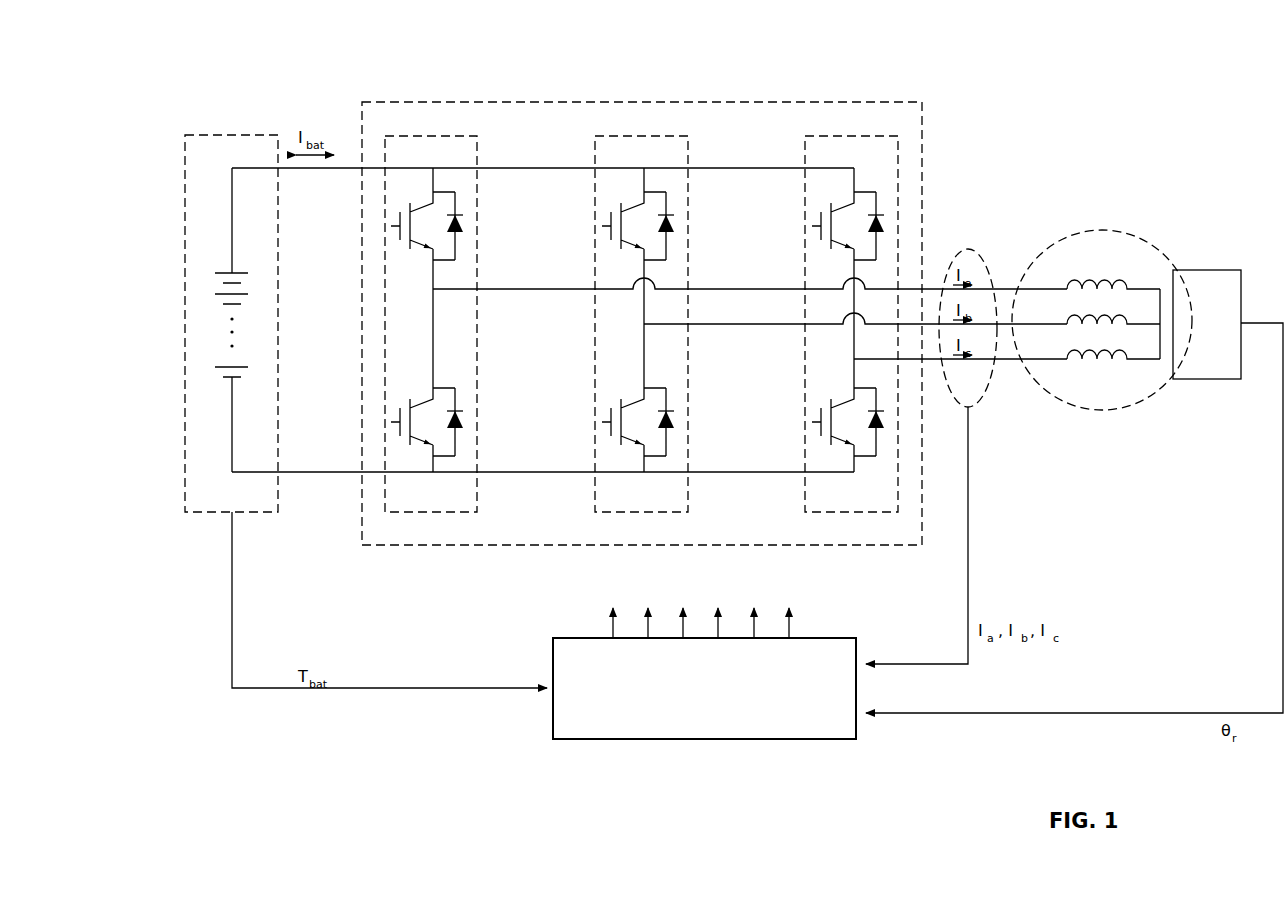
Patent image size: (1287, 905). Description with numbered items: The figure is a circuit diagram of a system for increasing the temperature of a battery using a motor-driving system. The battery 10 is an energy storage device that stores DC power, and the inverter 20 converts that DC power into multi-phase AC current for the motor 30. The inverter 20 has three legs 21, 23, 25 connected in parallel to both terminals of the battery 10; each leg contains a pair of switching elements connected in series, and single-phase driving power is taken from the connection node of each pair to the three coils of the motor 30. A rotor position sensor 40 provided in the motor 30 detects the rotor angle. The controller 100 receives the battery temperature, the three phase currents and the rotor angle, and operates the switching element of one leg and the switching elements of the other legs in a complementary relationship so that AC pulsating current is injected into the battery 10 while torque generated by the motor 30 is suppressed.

The battery 10 is at (232, 135).
The inverter 20 is at (750, 102).
The first leg 21 is at (432, 136).
The second leg 23 is at (641, 136).
The third leg 25 is at (851, 136).
The motor 30 is at (1092, 230).
The rotor position sensor 40 is at (1208, 270).
The controller 100 is at (704, 739).